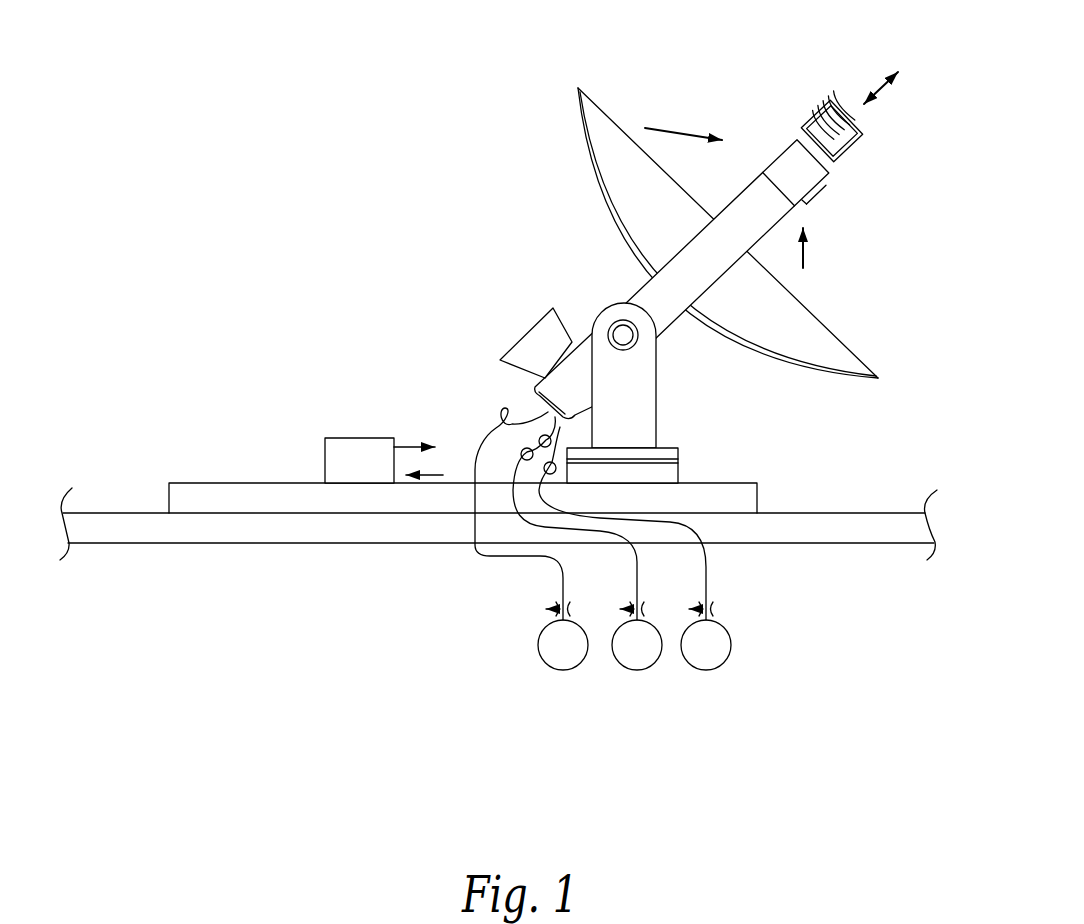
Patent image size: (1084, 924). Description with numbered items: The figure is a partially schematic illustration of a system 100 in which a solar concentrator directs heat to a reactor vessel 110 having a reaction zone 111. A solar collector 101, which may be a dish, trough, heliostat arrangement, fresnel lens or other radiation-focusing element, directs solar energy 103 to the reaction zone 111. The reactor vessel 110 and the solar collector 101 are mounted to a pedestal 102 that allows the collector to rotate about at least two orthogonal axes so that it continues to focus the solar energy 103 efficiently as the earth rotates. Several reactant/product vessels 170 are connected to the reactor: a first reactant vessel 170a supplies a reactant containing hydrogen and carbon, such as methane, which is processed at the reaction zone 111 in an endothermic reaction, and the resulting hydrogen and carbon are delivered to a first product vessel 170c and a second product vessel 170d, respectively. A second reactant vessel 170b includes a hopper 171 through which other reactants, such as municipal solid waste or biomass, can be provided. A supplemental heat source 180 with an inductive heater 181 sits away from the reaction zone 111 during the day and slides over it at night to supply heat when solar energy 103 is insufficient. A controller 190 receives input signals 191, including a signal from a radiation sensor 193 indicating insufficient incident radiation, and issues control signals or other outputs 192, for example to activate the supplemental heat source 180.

The system 100 is at (326, 228).
The solar collector 101 is at (593, 137).
The pedestal 102 is at (662, 397).
The solar energy 103 is at (683, 130).
The reactor vessel 110 is at (698, 298).
The reaction zone 111 is at (826, 203).
The reactant/product vessels 170 is at (522, 771).
The first reactant vessel 170a is at (566, 676).
The second reactant vessel 170b is at (526, 296).
The first product vessel 170c is at (640, 676).
The second product vessel 170d is at (709, 676).
The hopper 171 is at (562, 325).
The supplemental heat source 180 is at (866, 146).
The inductive heater 181 is at (817, 108).
The controller 190 is at (323, 458).
The input signals 191 is at (415, 478).
The control signals or other outputs 192 is at (408, 442).
The radiation sensor 193 is at (762, 168).